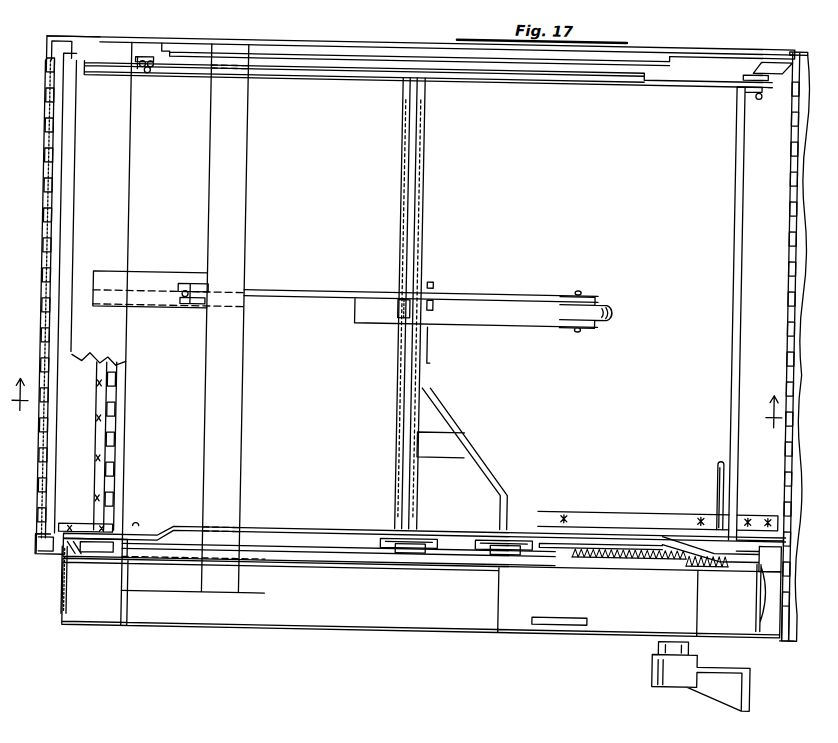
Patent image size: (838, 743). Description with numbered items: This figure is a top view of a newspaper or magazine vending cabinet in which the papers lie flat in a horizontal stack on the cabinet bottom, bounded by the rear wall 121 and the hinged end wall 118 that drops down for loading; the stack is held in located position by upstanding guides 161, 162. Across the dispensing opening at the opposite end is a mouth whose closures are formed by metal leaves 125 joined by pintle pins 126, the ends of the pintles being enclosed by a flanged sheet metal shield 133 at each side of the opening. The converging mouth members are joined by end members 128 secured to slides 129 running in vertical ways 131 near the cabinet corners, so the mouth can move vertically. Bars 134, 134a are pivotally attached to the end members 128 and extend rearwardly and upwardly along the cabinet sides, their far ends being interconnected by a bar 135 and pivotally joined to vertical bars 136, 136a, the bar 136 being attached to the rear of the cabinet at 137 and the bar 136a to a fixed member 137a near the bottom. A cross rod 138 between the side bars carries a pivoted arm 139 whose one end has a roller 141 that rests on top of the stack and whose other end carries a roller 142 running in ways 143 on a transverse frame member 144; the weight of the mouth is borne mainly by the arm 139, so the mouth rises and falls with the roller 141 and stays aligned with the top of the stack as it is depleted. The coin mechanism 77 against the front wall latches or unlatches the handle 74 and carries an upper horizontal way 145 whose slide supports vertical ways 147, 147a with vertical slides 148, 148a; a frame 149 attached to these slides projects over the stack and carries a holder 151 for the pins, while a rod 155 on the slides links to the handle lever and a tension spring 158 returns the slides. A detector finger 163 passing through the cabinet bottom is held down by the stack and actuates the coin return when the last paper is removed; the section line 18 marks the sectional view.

The section line 18 is at (397, 413).
The handle 74 is at (712, 686).
The coin mechanism 77 is at (633, 596).
The end wall 118 is at (794, 636).
The rear wall 121 is at (302, 46).
The metal leaves 125 is at (52, 97).
The pintle pins 126 is at (56, 58).
The end members 128 is at (142, 76).
The slides 129 is at (103, 564).
The vertical ways 131 is at (69, 565).
The flanged sheet metal shield 133 is at (49, 562).
The bar 134 is at (290, 79).
The bar 134a is at (270, 531).
The bar 135 is at (735, 192).
The vertical bar 136 is at (775, 84).
The vertical bar 136a is at (748, 540).
The attachment point 137 is at (773, 46).
The fixed member 137a is at (775, 586).
The cross rod 138 is at (403, 307).
The arm 139 is at (340, 293).
The roller 141 is at (606, 306).
The roller 142 is at (194, 311).
The ways 143 is at (152, 283).
The transverse frame member 144 is at (246, 410).
The upper horizontal way 145 is at (418, 555).
The vertical way 147 is at (488, 538).
The vertical way 147a is at (386, 545).
The vertical slide 148 is at (509, 549).
The vertical slide 148a is at (417, 547).
The frame 149 is at (447, 430).
The holder 151 is at (431, 285).
The rod 155 is at (547, 509).
The tension spring 158 is at (628, 552).
The upstanding guide 161 is at (594, 529).
The upstanding guide 162 is at (347, 60).
The detector finger 163 is at (721, 459).